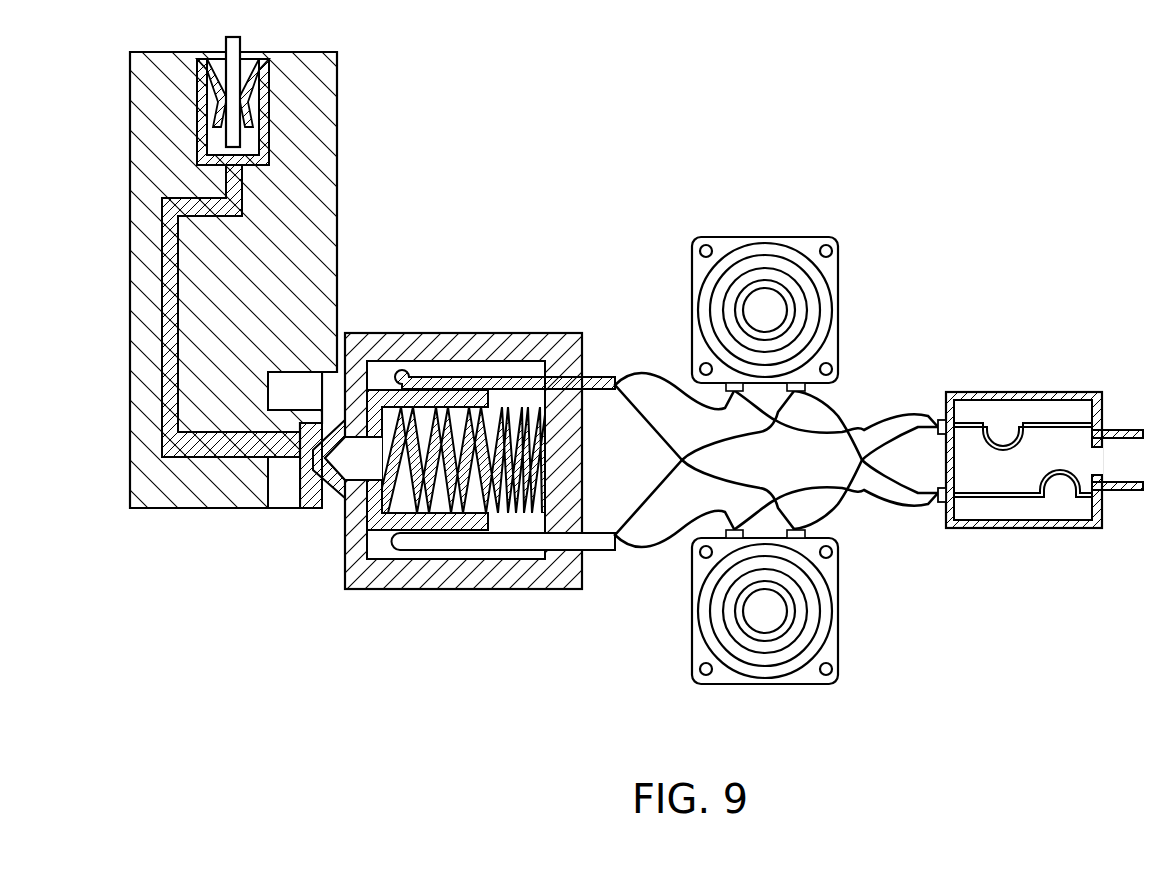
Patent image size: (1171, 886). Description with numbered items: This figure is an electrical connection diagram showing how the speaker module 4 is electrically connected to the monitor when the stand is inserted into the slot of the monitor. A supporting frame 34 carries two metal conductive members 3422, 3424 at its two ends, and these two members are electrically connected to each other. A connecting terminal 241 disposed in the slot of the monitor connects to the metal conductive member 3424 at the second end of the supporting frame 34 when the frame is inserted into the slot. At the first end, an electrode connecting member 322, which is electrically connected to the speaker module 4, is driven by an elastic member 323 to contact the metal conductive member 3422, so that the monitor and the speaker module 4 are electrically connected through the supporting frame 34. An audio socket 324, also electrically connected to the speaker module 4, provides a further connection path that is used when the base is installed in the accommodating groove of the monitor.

The supporting frame 34 is at (345, 84).
The metal conductive member 3424 is at (198, 106).
The connecting terminal 241 is at (233, 37).
The metal conductive member 3422 is at (313, 510).
The electrode connecting member 322 is at (337, 514).
The elastic member 323 is at (497, 505).
The speaker module 4 is at (807, 236).
The audio socket 324 is at (1058, 392).